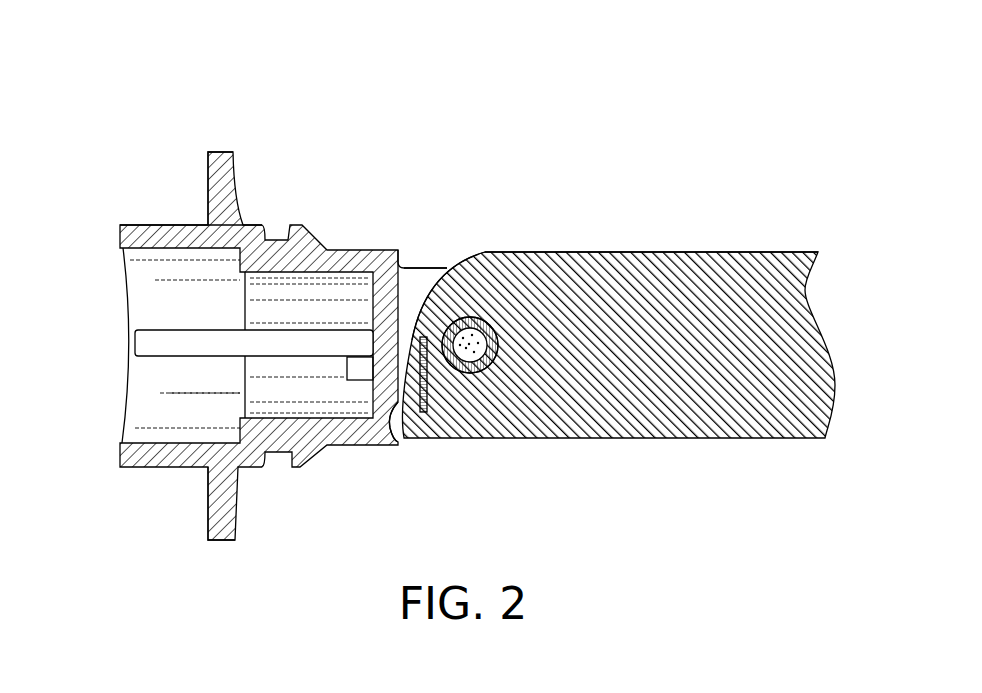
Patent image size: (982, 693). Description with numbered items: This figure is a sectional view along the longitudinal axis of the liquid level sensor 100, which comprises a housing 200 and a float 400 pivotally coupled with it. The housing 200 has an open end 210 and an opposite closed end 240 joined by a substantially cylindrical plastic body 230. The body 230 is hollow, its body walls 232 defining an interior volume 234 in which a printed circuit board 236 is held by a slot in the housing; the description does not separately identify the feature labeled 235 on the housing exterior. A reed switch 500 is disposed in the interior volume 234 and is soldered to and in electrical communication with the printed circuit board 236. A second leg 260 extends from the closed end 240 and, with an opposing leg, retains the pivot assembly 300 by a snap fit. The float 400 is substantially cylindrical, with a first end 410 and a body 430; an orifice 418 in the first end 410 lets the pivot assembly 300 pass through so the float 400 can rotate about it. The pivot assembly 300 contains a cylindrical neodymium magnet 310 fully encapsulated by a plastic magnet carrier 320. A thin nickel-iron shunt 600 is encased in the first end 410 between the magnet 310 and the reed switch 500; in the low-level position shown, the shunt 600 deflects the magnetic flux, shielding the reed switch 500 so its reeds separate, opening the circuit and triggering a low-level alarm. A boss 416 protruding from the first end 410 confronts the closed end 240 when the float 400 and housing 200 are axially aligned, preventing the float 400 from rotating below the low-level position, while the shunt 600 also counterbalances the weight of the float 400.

The liquid level sensor 100 is at (628, 100).
The housing 200 is at (306, 166).
The open end 210 is at (126, 272).
The body 230 is at (152, 223).
The body walls 232 is at (160, 458).
The interior volume 234 is at (157, 392).
The upper flange 235 is at (222, 150).
The printed circuit board 236 is at (140, 345).
The closed end 240 is at (398, 250).
The second leg 260 is at (430, 268).
The pivot assembly 300 is at (494, 385).
The magnet 310 is at (461, 363).
The magnet carrier 320 is at (500, 354).
The float 400 is at (762, 204).
The first end 410 is at (480, 252).
The boss 416 is at (395, 433).
The orifice 418 is at (497, 327).
The body 430 is at (665, 252).
The reed switch 500 is at (355, 372).
The shunt 600 is at (423, 413).